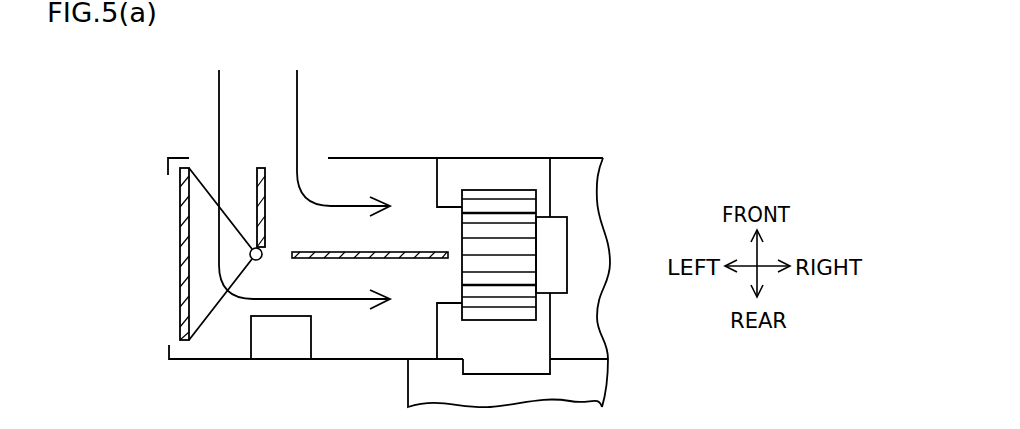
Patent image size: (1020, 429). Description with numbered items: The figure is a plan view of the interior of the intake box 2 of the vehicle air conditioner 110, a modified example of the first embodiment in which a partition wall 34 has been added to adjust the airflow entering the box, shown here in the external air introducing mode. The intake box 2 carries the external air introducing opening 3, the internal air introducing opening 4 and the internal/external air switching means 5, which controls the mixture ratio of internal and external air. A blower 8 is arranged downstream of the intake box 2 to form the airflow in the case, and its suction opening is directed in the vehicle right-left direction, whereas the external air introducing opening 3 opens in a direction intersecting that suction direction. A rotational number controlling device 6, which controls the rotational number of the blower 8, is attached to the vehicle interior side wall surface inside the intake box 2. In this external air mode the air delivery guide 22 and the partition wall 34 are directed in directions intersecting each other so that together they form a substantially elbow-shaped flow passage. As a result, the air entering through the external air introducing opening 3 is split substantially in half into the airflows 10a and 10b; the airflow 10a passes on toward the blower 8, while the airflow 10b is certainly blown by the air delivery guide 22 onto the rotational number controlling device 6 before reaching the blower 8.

The vehicle air conditioner 110 is at (640, 107).
The airflow 10a is at (297, 92).
The airflow 10b is at (219, 90).
The external air introducing opening 3 is at (336, 157).
The intake box 2 is at (413, 158).
The blower 8 is at (497, 190).
The internal/external air switching means 5 is at (180, 238).
The air delivery guide 22 is at (265, 212).
The internal air introducing opening 4 is at (169, 345).
The rotational number controlling device 6 is at (251, 340).
The partition wall 34 is at (410, 262).